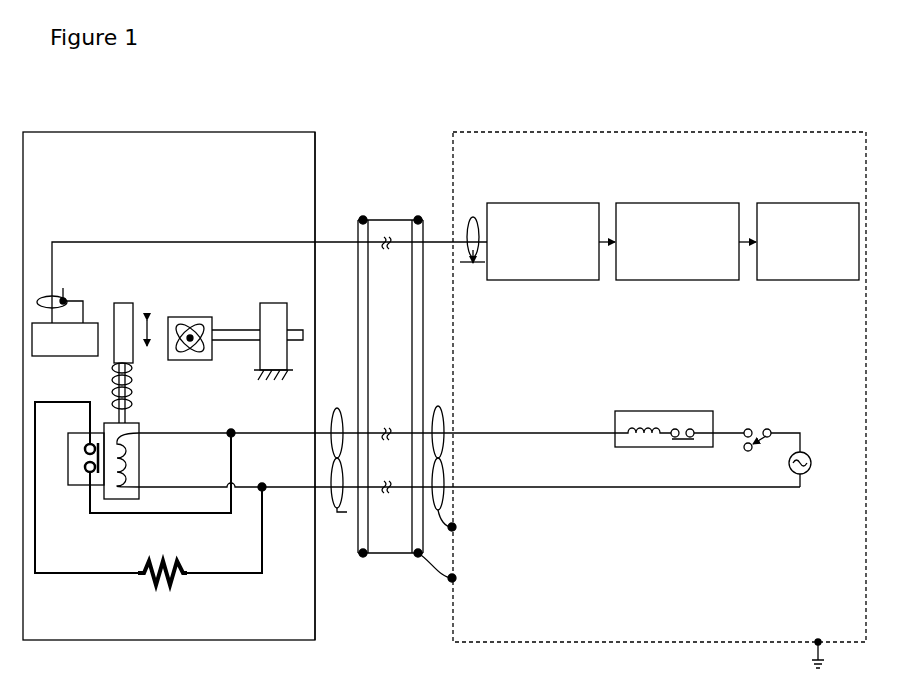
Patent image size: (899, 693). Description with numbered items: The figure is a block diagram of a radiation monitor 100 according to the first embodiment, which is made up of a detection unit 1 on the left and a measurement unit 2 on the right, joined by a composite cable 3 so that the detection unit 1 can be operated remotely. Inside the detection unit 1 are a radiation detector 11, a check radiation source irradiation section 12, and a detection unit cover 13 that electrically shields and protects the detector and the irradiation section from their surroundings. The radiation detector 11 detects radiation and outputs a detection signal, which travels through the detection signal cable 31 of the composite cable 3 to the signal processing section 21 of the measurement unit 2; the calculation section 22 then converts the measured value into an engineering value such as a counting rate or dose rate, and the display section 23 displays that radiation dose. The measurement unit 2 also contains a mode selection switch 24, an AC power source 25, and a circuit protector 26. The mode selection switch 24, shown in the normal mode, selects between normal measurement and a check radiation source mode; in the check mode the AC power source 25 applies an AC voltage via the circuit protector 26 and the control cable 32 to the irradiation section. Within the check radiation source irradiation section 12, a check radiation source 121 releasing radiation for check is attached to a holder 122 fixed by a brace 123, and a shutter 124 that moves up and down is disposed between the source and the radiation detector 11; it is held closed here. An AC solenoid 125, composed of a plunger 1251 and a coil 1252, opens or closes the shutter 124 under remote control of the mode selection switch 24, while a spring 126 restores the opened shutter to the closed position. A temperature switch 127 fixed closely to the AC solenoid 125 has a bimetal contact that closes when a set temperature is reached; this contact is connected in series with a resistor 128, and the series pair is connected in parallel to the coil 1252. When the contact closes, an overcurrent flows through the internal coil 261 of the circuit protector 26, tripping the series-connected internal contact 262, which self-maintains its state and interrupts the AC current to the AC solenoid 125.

The radiation monitor 100 is at (800, 53).
The detection unit 1 is at (67, 124).
The measurement unit 2 is at (785, 132).
The composite cable 3 is at (378, 558).
The radiation detector 11 is at (65, 345).
The check radiation source irradiation section 12 is at (300, 632).
The detection unit cover 13 is at (316, 160).
The signal processing section 21 is at (533, 203).
The calculation section 22 is at (660, 203).
The display section 23 is at (797, 203).
The mode selection switch 24 is at (762, 425).
The AC power source 25 is at (812, 455).
The circuit protector 26 is at (655, 411).
The detection signal cable 31 is at (339, 236).
The control cable 32 is at (340, 403).
The check radiation source 121 is at (186, 317).
The holder 122 is at (212, 360).
The brace 123 is at (265, 303).
The shutter 124 is at (140, 293).
The AC solenoid 125 is at (140, 450).
The spring 126 is at (133, 385).
The temperature switch 127 is at (75, 487).
The resistor 128 is at (165, 590).
The internal coil 261 is at (638, 447).
The internal contact 262 is at (692, 447).
The plunger 1251 is at (130, 412).
The coil 1252 is at (135, 470).